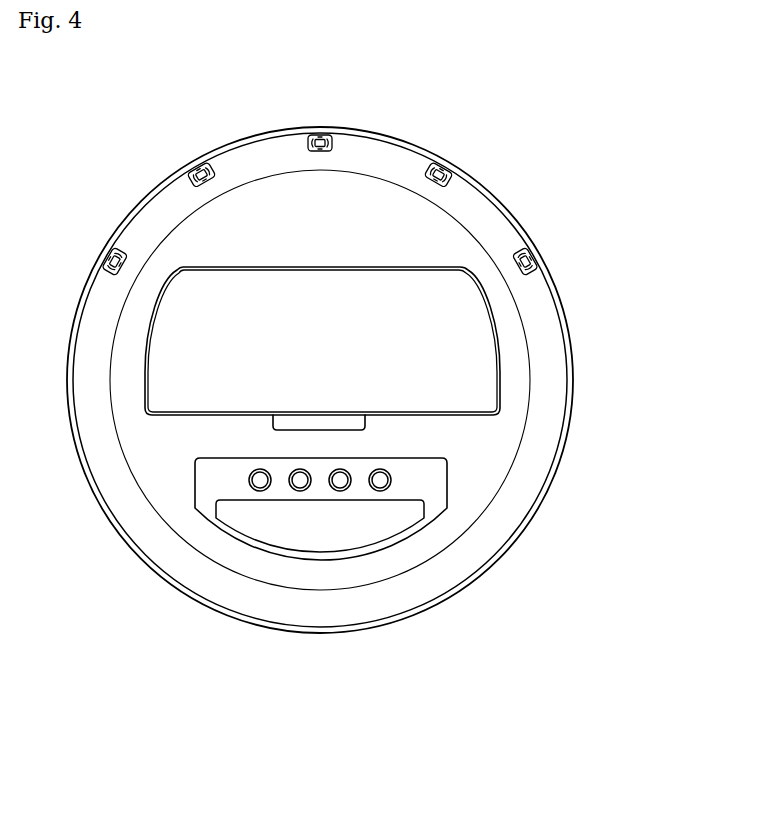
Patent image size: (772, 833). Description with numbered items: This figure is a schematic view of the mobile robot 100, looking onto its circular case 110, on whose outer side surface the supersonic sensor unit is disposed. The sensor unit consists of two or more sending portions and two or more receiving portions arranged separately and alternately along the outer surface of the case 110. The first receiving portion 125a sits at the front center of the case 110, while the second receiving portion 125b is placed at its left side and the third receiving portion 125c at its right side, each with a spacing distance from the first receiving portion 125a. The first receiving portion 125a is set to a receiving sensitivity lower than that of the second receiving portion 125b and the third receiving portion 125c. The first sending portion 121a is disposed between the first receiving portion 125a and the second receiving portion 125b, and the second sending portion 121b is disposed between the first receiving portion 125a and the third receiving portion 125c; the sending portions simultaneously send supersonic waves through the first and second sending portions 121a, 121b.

The robot cleaner 100 is at (328, 368).
The case 110 is at (467, 588).
The first sending portion 121a is at (200, 166).
The second sending portion 121b is at (446, 166).
The first receiving portion 125a is at (322, 133).
The second receiving portion 125b is at (108, 256).
The third receiving portion 125c is at (533, 256).